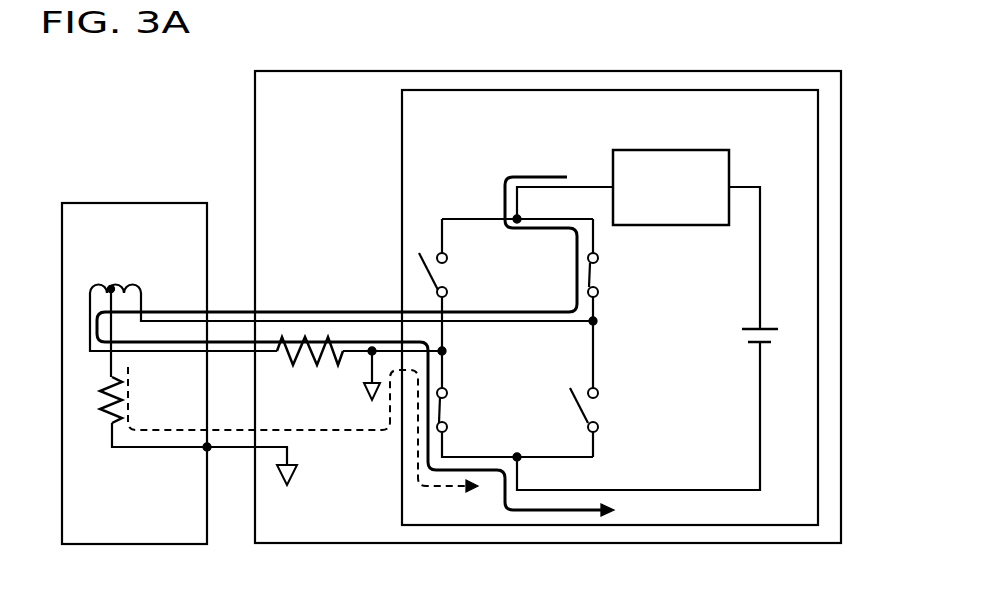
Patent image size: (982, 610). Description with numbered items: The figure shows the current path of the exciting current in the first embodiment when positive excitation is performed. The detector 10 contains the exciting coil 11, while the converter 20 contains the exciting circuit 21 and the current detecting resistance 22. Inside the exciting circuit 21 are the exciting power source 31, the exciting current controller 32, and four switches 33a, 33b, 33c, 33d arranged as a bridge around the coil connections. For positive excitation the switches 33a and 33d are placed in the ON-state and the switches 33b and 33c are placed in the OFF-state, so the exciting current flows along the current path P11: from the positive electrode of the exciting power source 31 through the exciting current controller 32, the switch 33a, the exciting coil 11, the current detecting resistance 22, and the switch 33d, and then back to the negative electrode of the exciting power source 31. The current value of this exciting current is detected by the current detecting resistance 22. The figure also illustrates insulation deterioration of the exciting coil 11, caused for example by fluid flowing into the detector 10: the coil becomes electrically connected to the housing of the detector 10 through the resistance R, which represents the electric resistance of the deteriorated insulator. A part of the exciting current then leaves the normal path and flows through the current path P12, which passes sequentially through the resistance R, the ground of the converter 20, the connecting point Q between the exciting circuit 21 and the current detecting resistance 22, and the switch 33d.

The detector 10 is at (165, 203).
The exciting coil 11 is at (133, 287).
The converter 20 is at (762, 70).
The exciting circuit 21 is at (402, 138).
The current detecting resistance 22 is at (310, 366).
The exciting power source 31 is at (765, 325).
The exciting current controller 32 is at (688, 148).
The switch 33a is at (607, 273).
The switch 33b is at (455, 275).
The switch 33c is at (609, 409).
The switch 33d is at (457, 412).
The resistance R is at (100, 392).
The connecting point Q is at (371, 353).
The current path P11 is at (327, 310).
The current path P12 is at (342, 432).